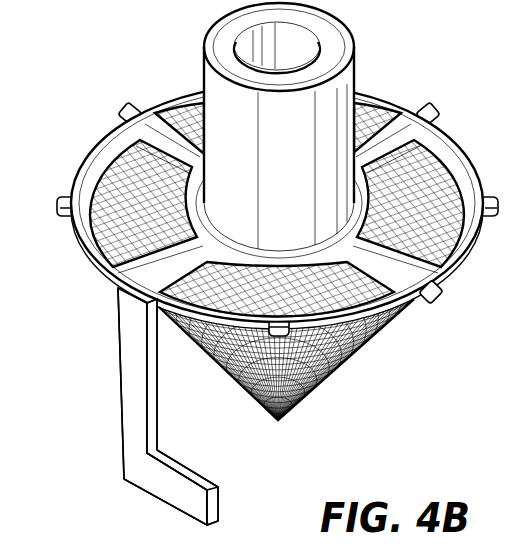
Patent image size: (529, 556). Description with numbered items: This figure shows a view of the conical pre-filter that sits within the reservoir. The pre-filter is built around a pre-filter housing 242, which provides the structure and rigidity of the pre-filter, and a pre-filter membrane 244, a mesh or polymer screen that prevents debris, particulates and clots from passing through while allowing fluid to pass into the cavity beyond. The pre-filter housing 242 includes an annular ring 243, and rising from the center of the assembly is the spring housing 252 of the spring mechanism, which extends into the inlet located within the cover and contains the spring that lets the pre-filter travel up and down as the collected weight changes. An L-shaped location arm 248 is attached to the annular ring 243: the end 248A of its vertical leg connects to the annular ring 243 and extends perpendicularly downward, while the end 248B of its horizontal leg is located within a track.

The pre-filter housing 242 is at (463, 153).
The annular ring 243 is at (100, 142).
The pre-filter membrane 244 is at (337, 355).
The location arm 248 is at (123, 406).
The end of vertical leg of location arm 248A is at (130, 327).
The end of horizontal leg of location arm 248B is at (173, 496).
The spring housing 252 is at (212, 78).